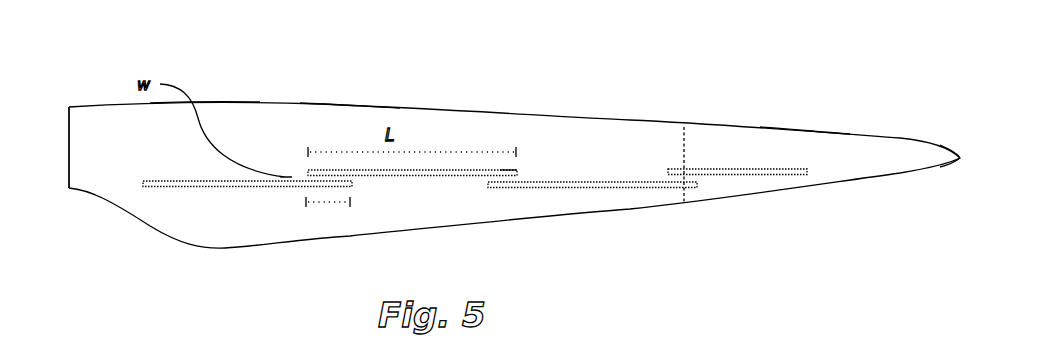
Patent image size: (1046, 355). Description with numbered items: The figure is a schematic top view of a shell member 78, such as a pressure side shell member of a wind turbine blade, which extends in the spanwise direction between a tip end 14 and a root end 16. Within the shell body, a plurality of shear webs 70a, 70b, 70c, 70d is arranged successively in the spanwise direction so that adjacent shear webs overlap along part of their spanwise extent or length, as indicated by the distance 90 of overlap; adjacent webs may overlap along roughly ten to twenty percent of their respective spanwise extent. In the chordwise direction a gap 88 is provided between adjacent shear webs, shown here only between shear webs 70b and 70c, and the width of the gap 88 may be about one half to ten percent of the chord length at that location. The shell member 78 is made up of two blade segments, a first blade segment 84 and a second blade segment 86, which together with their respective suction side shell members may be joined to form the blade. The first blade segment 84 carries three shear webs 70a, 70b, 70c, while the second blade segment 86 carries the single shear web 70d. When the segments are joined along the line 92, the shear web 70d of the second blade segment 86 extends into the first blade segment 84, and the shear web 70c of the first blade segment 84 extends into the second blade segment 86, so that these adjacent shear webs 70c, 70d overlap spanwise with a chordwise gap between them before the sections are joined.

The tip end 14 is at (960, 158).
The root end 16 is at (69, 118).
The shear web 70a is at (170, 187).
The shear web 70b is at (405, 174).
The shear web 70c is at (567, 188).
The shear web 70d is at (758, 174).
The shell member 78 is at (333, 117).
The first blade segment 84 is at (228, 118).
The second blade segment 86 is at (818, 146).
The gap 88 is at (512, 179).
The distance of overlap 90 is at (325, 207).
The line 92 is at (687, 147).